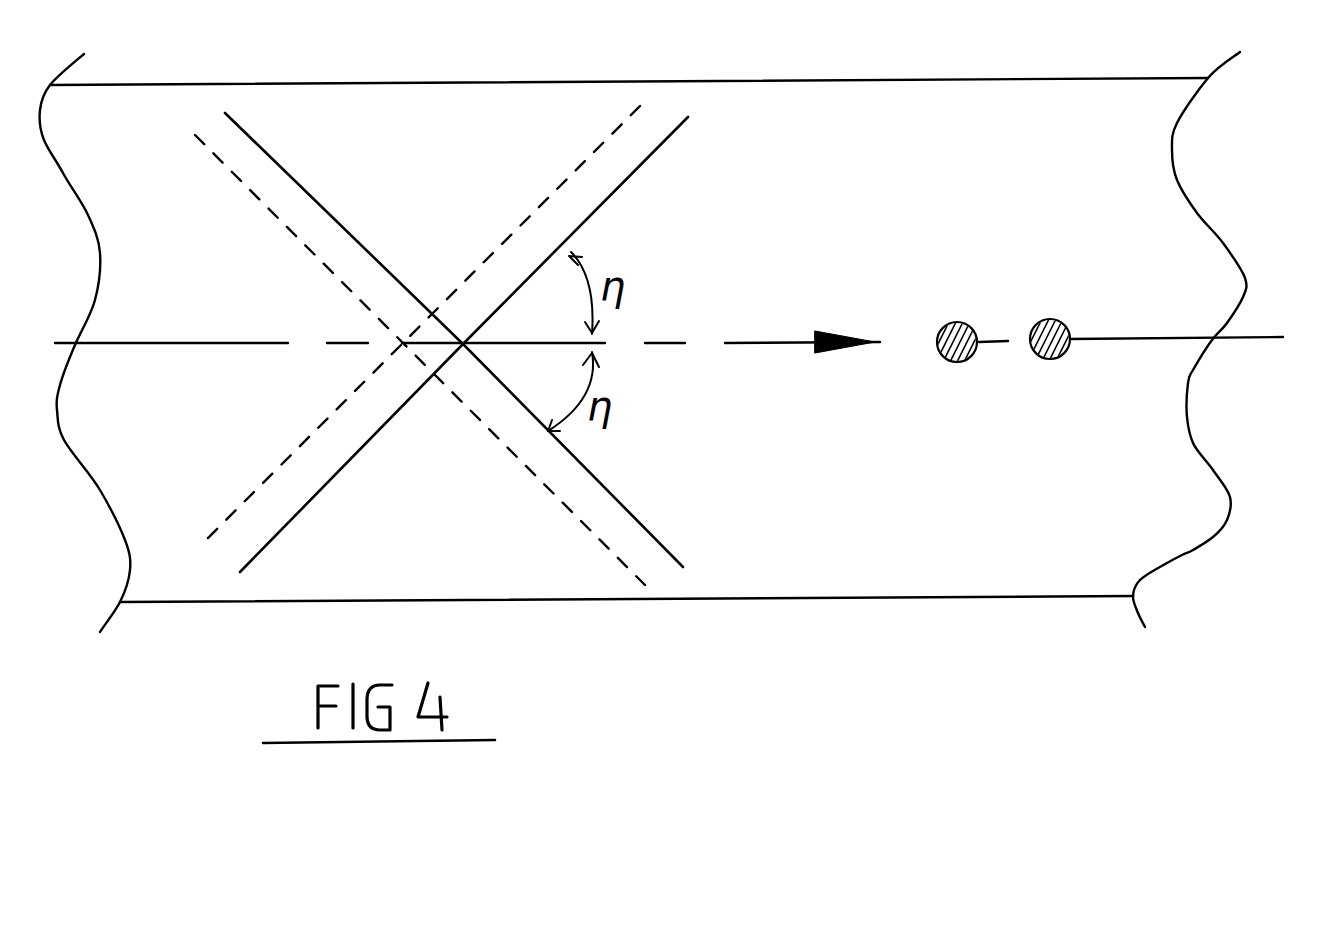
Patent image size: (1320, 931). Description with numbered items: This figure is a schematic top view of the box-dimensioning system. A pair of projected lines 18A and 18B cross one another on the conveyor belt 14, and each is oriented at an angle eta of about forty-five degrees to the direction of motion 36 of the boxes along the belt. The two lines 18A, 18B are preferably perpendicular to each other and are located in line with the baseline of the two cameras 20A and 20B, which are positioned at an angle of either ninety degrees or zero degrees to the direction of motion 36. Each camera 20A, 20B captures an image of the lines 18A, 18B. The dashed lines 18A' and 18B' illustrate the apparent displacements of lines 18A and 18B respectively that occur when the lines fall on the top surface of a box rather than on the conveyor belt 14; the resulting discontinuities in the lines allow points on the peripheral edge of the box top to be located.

The conveyor belt 14 is at (1117, 542).
The direction of motion 36 is at (744, 344).
The line 18A is at (454, 340).
The line 18B is at (486, 344).
The apparent displacement of line 18A 18A' is at (392, 360).
The apparent displacement of line 18B 18B' is at (420, 326).
The camera 20A is at (1002, 262).
The camera 20B is at (1058, 318).